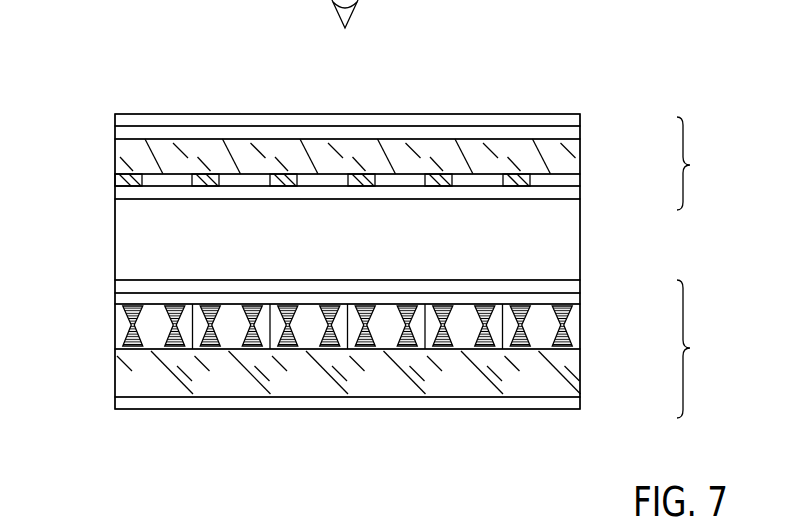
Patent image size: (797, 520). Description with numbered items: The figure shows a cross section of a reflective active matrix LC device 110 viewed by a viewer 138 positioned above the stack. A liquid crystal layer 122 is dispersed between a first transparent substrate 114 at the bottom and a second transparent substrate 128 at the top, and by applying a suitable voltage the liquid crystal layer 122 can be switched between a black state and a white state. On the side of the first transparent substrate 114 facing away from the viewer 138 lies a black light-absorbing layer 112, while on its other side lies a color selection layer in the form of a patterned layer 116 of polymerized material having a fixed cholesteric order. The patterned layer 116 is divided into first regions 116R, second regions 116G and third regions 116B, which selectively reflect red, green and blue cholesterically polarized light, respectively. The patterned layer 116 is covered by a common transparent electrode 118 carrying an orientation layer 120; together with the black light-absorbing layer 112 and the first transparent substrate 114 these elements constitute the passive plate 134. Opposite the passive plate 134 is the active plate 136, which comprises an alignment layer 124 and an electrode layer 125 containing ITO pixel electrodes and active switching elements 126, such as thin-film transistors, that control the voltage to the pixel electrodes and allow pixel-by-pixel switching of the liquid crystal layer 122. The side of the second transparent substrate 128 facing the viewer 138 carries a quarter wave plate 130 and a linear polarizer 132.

The reflective active matrix LC device 110 is at (80, 103).
The viewer 138 is at (356, 14).
The linear polarizer 132 is at (580, 121).
The quarter wave plate 130 is at (580, 130).
The second transparent substrate 128 is at (580, 156).
The electrode layer 125 is at (580, 182).
The active switching elements 126 is at (136, 172).
The alignment layer 124 is at (580, 196).
The liquid crystal layer 122 is at (580, 241).
The orientation layer 120 is at (580, 286).
The common transparent electrode 118 is at (580, 300).
The patterned layer 116 is at (580, 328).
The first regions 116R is at (152, 346).
The second regions 116G is at (231, 346).
The third regions 116B is at (309, 346).
The first transparent substrate 114 is at (580, 365).
The black light-absorbing layer 112 is at (580, 404).
The active plate 136 is at (701, 163).
The passive plate 134 is at (702, 349).